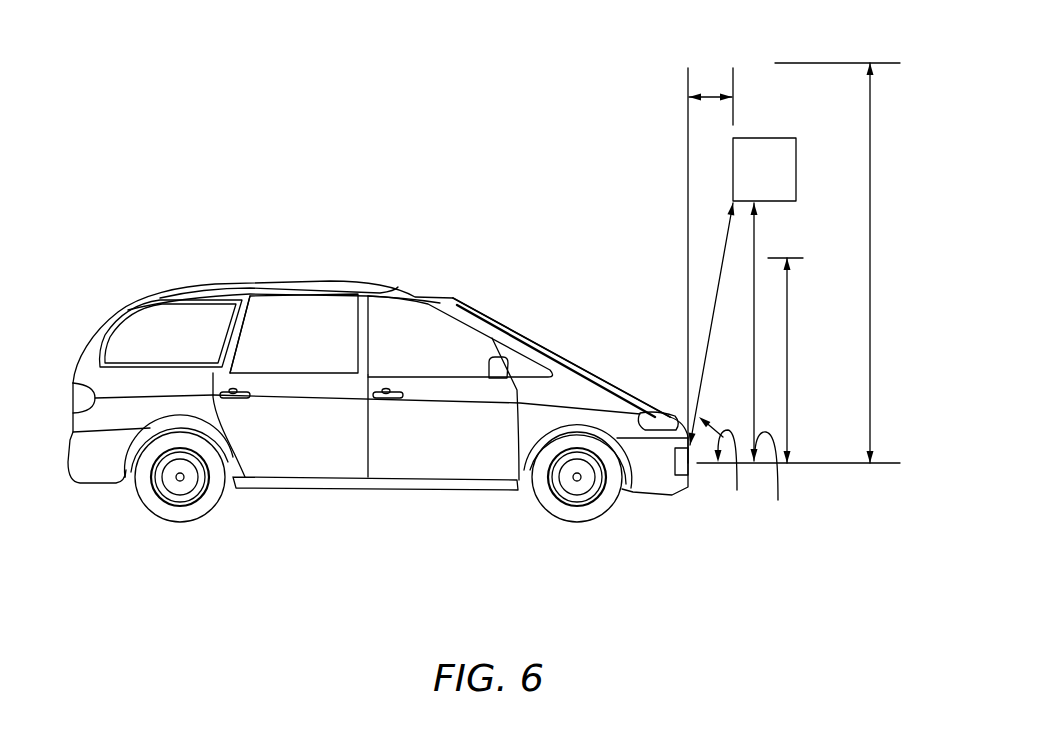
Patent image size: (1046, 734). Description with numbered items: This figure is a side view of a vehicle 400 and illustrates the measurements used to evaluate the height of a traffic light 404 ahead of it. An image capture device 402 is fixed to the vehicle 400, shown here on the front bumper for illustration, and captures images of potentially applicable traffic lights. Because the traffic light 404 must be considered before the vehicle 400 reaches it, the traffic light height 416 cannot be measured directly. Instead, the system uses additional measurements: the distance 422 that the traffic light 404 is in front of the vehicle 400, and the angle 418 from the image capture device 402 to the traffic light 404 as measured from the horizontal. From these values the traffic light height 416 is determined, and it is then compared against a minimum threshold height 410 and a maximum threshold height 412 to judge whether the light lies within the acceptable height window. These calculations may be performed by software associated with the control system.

The vehicle 400 is at (333, 280).
The image capture device 402 is at (683, 474).
The traffic light 404 is at (765, 138).
The minimum threshold height 410 is at (787, 420).
The maximum threshold height 412 is at (870, 352).
The traffic light height 416 is at (776, 484).
The angle 418 is at (727, 467).
The distance 422 is at (710, 95).